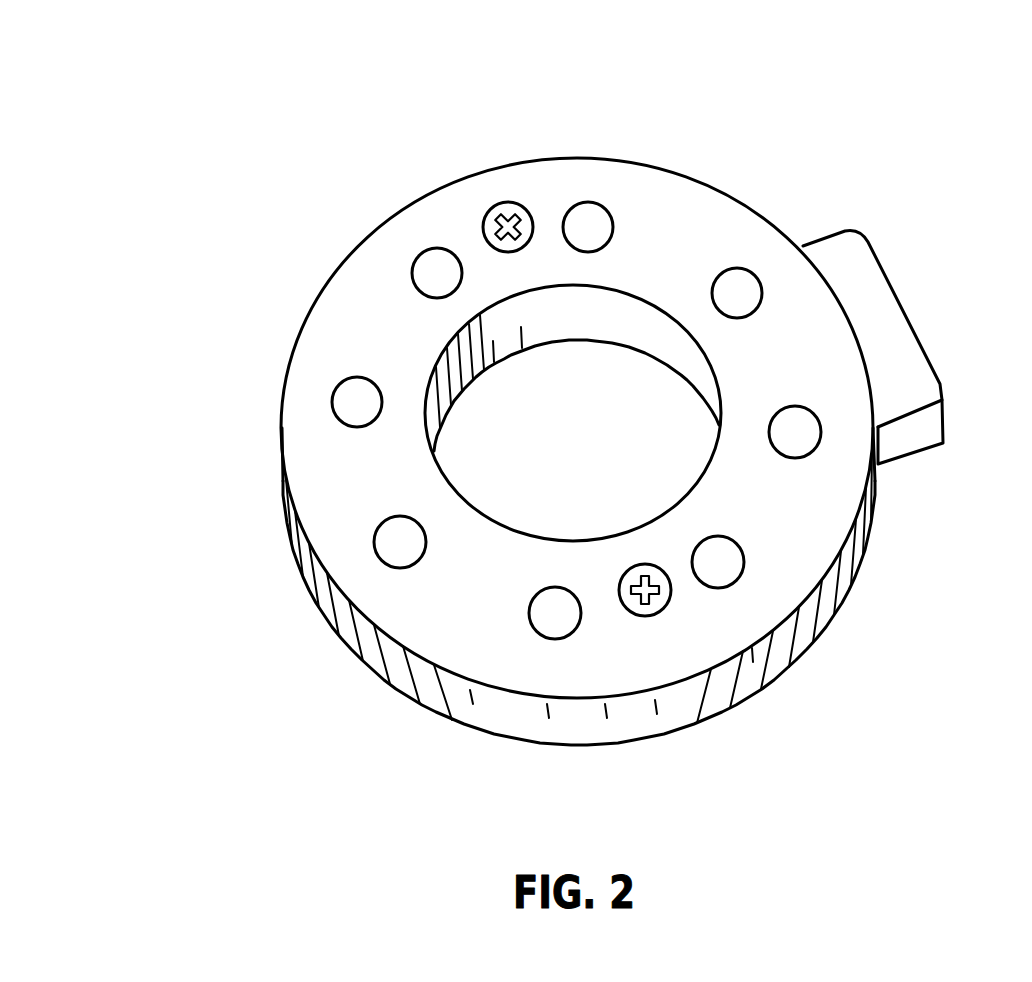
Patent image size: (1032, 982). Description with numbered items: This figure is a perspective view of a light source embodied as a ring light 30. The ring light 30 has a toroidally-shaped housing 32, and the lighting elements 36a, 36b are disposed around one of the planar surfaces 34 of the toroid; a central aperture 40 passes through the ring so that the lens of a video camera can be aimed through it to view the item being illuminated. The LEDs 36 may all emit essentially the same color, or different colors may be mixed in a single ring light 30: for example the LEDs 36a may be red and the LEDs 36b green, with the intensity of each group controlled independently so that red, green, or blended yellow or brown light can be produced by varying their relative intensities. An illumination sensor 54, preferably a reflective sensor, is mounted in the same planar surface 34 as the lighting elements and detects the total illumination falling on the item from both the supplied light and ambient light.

The ring light 30 is at (279, 141).
The toroidally-shaped housing 32 is at (682, 697).
The planar surface 34 is at (423, 615).
The LEDs 36 is at (298, 445).
The red LEDs 36a is at (428, 273).
The green LEDs 36b is at (588, 225).
The central bore 40 is at (573, 413).
The illumination sensor 54 is at (882, 291).